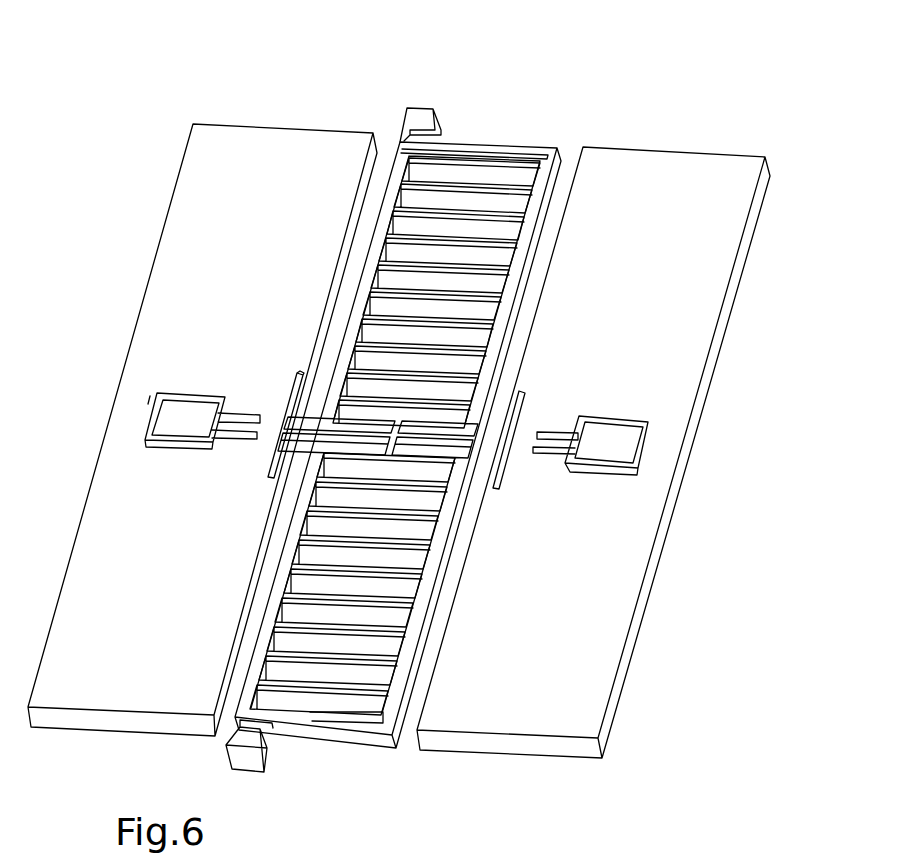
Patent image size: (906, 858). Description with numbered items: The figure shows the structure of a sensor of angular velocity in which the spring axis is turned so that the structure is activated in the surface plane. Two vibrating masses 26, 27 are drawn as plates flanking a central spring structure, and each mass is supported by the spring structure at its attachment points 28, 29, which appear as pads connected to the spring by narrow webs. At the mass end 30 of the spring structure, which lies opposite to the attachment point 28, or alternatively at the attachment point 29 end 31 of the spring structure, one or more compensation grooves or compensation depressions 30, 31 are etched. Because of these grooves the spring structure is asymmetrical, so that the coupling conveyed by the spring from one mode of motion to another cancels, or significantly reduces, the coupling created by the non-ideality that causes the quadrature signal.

The vibrating mass 26 is at (240, 123).
The vibrating mass 27 is at (670, 147).
The attachment point 28 is at (200, 393).
The attachment point 29 is at (622, 418).
The mass end of the spring structure / compensation groove 30 is at (270, 424).
The attachment point end of the spring structure / compensation groove 31 is at (596, 446).